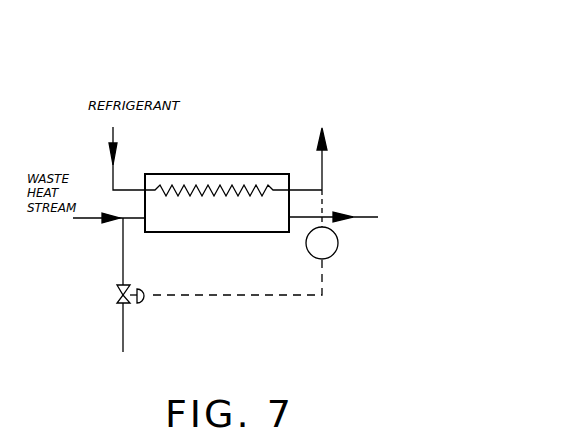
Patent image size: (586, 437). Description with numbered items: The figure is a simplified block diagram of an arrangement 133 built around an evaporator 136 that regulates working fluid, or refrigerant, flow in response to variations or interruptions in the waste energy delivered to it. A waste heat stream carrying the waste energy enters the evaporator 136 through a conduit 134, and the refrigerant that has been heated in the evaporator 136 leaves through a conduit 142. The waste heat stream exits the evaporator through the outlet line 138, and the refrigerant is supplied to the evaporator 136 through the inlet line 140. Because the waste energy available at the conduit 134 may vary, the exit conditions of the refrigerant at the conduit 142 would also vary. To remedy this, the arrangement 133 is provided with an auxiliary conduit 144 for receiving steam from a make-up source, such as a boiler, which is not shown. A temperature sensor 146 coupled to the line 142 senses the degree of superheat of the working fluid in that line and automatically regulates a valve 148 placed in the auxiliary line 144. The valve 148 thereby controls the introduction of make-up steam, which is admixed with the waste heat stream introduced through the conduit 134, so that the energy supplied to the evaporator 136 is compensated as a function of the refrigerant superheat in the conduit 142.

The arrangement 133 is at (343, 327).
The conduit 134 is at (94, 221).
The evaporator 136 is at (237, 233).
The waste heat stream outlet line 138 is at (357, 216).
The refrigerant inlet line 140 is at (113, 132).
The conduit 142 is at (318, 131).
The auxiliary conduit 144 is at (123, 330).
The temperature sensor 146 is at (338, 248).
The valve 148 is at (117, 294).